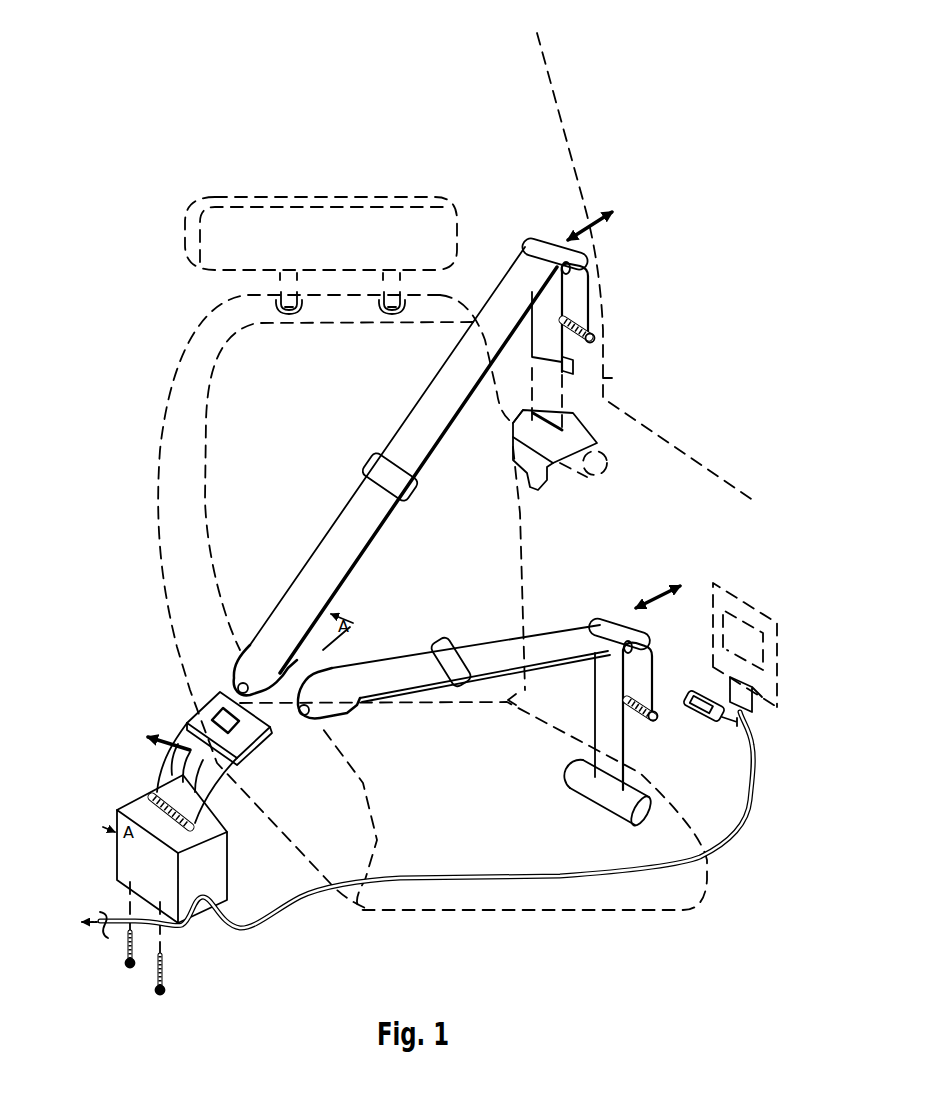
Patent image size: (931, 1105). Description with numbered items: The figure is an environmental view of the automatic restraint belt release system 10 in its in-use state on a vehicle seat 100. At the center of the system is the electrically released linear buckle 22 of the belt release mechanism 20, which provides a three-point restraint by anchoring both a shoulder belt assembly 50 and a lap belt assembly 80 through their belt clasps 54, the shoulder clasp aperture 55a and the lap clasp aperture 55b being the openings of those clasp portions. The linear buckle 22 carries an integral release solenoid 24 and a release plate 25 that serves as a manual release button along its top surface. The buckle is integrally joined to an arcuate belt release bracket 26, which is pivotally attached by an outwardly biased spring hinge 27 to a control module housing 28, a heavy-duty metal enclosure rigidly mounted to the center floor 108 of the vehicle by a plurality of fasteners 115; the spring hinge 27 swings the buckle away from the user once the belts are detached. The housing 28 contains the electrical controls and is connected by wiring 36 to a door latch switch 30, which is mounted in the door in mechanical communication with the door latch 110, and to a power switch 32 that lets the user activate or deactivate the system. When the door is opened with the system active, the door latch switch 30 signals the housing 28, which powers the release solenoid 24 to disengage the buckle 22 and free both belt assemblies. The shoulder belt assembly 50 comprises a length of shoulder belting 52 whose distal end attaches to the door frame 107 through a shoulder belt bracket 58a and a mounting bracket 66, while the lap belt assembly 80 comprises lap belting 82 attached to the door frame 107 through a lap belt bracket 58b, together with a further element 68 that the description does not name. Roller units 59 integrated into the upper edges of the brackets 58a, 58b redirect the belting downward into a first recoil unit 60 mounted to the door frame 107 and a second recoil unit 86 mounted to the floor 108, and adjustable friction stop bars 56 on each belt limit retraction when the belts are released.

The automatic restraint belt release system 10 is at (123, 145).
The belt release mechanism 20 is at (178, 770).
The linear buckle 22 is at (207, 720).
The release solenoid 24 is at (245, 750).
The release plate 25 is at (215, 703).
The belt release bracket 26 is at (207, 776).
The spring hinge 27 is at (165, 820).
The control module housing 28 is at (130, 850).
The door latch switch 30 is at (748, 716).
The power switch 32 is at (722, 728).
The wiring 36 is at (186, 932).
The shoulder belt assembly 50 is at (459, 470).
The shoulder belting 52 is at (355, 525).
The belt clasp 54 is at (315, 728).
The shoulder clasp aperture 55a is at (263, 703).
The lap clasp aperture 55b is at (318, 720).
The stop bar 56 is at (452, 660).
The shoulder belt bracket 58a is at (578, 290).
The lap belt bracket 58b is at (642, 667).
The roller unit 59 is at (532, 242).
The first recoil unit 60 is at (575, 437).
The mounting bracket 66 is at (593, 342).
The fastener bolt 68 is at (656, 721).
The lap belt assembly 80 is at (484, 685).
The lap belting 82 is at (503, 660).
The second recoil unit 86 is at (603, 797).
The vehicle seat 100 is at (322, 340).
The door frame 107 is at (612, 378).
The floor 108 is at (480, 937).
The door latch 110 is at (757, 598).
The fastener 115 is at (160, 994).